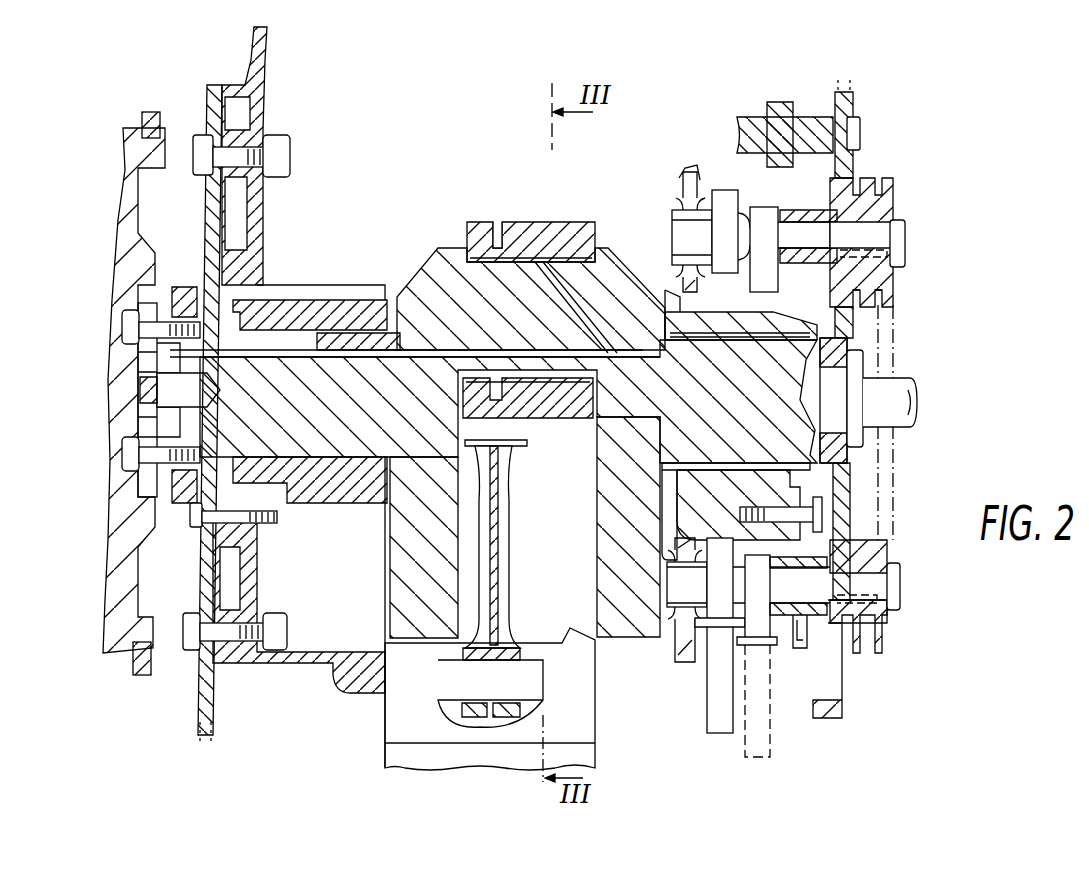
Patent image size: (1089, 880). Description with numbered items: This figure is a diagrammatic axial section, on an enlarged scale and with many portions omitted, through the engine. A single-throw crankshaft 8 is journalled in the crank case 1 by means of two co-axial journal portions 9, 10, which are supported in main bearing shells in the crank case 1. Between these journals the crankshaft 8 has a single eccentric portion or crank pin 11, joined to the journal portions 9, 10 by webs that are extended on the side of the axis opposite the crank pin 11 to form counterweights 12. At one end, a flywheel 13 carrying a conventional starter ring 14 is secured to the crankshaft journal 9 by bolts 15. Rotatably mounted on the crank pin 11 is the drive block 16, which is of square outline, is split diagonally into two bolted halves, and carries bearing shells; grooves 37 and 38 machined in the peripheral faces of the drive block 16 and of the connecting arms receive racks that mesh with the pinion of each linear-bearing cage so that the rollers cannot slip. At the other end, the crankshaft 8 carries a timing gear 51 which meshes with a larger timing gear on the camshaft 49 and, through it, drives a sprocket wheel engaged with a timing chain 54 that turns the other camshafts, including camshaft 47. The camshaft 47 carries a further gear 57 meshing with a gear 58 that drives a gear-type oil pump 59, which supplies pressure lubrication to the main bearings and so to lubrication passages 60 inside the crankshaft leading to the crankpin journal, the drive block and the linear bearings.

The crank case 1 is at (382, 320).
The single-throw crankshaft 8 is at (624, 244).
The journal portion 9 is at (493, 401).
The journal portion 10 is at (742, 425).
The crank pin 11 is at (531, 299).
The counterweights 12 is at (525, 527).
The flywheel 13 is at (128, 208).
The starter ring 14 is at (151, 124).
The bolts 15 is at (122, 455).
The drive block 16 is at (537, 240).
The groove 37 is at (497, 240).
The groove 38 is at (525, 425).
The camshaft 47 is at (900, 210).
The camshaft 49 is at (790, 593).
The timing gear 51 is at (833, 358).
The timing chain 54 is at (878, 653).
The gear 57 is at (837, 290).
The gear 58 is at (853, 167).
The oil pump 59 is at (745, 130).
The lubrication passages 60 is at (562, 313).